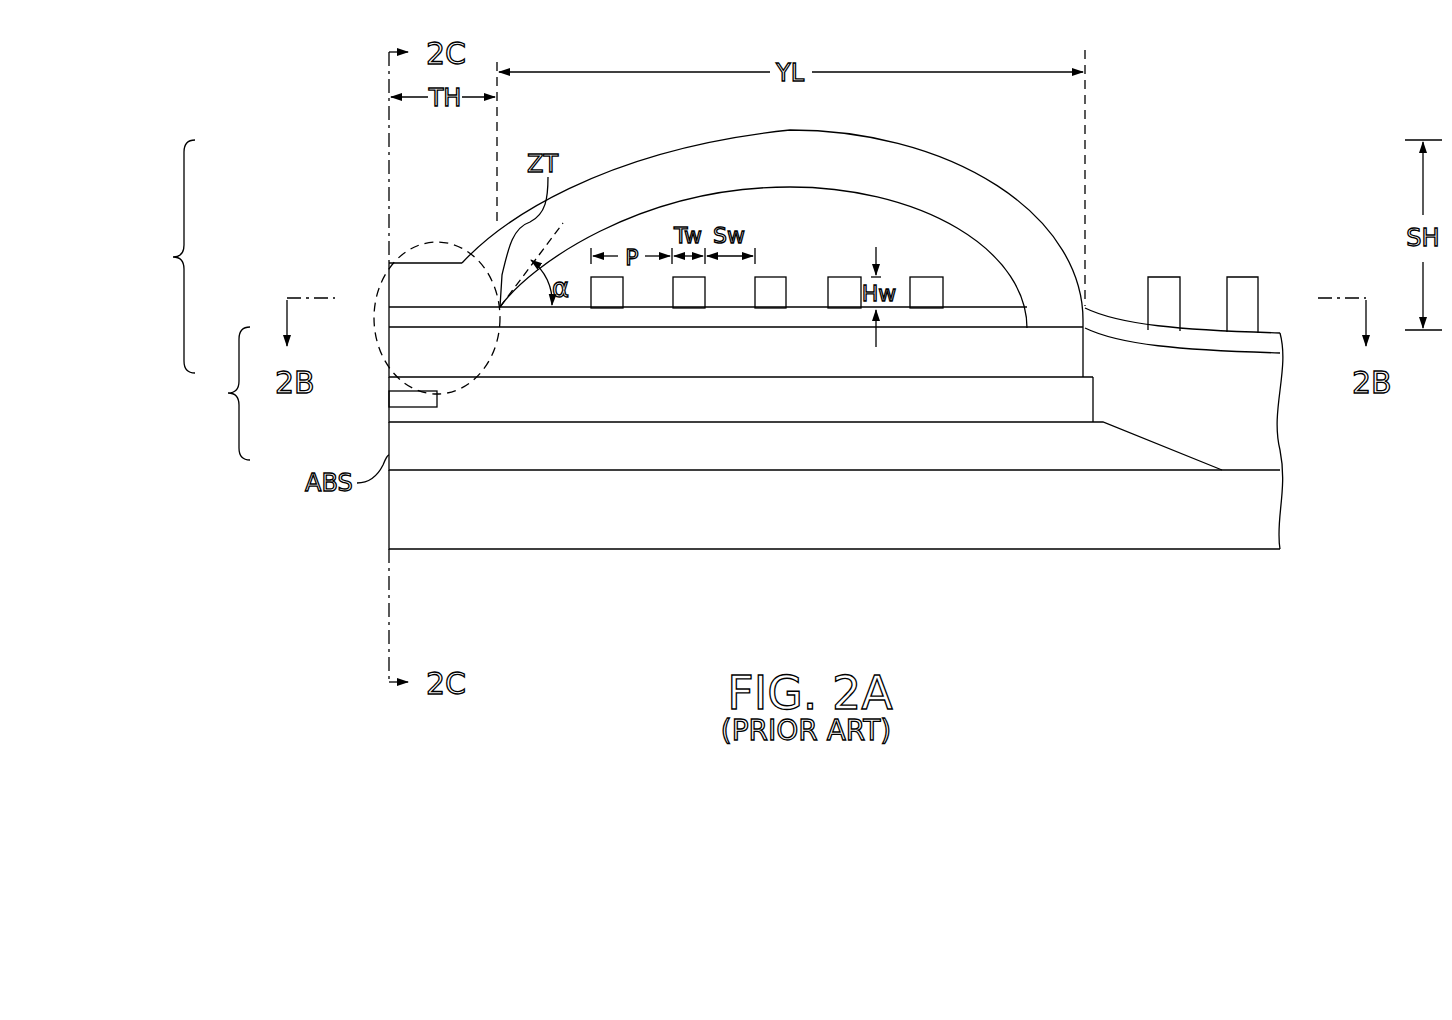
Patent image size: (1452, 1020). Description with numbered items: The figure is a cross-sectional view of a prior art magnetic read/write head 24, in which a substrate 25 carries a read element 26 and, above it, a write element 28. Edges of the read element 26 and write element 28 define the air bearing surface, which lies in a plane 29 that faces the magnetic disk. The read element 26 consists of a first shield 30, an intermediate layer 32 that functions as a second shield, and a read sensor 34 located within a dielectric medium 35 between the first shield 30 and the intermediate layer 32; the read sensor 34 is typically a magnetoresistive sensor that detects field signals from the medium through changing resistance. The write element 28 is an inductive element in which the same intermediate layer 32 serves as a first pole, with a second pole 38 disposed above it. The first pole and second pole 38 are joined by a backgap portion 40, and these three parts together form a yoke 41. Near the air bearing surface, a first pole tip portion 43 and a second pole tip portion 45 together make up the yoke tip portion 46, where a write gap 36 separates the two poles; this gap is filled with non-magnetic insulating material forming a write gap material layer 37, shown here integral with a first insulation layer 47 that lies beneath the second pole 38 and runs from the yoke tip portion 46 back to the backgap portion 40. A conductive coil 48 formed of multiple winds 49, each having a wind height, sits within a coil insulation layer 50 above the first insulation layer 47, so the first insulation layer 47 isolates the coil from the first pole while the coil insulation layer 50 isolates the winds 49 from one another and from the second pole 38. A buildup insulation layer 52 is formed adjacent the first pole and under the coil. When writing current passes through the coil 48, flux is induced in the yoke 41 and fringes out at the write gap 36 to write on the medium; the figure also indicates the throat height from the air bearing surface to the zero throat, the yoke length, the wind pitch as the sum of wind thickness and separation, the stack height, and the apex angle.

The magnetic read/write head 24 is at (1165, 98).
The substrate 25 is at (525, 529).
The read element 26 is at (223, 393).
The write element 28 is at (168, 256).
The plane 29 is at (389, 72).
The first shield 30 is at (525, 459).
The intermediate layer 32 is at (596, 364).
The read sensor 34 is at (389, 398).
The dielectric medium 35 is at (576, 407).
The write gap 36 is at (376, 318).
The write gap material layer 37 is at (425, 320).
The second pole 38 is at (810, 171).
The backgap portion 40 is at (1063, 303).
The yoke 41 is at (988, 153).
The first pole tip portion 43 is at (448, 364).
The second pole tip portion 45 is at (448, 296).
The yoke tip portion 46 is at (430, 235).
The first insulation layer 47 is at (676, 318).
The conductive coil 48 is at (797, 249).
The winds 49 is at (927, 288).
The coil insulation layer 50 is at (800, 224).
The buildup insulation layer 52 is at (1197, 404).